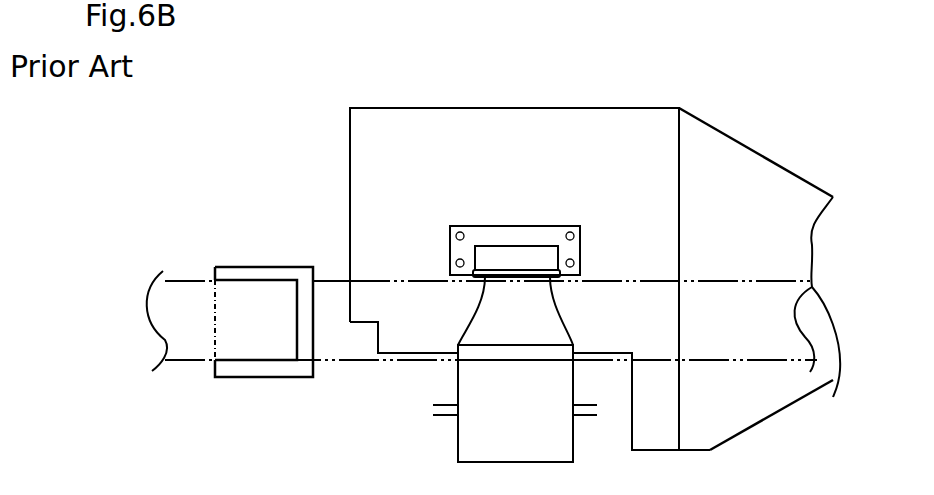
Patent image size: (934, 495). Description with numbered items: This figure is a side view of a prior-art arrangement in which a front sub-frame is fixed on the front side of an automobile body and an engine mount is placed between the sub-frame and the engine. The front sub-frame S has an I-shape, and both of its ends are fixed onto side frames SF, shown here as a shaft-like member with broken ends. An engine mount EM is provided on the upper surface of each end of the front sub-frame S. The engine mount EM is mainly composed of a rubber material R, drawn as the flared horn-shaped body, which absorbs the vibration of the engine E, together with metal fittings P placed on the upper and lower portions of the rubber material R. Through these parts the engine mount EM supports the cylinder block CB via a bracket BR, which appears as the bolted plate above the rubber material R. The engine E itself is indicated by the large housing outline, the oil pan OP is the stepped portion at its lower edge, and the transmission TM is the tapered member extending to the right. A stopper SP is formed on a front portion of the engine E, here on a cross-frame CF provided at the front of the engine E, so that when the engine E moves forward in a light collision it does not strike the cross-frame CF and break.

The stopper SP is at (250, 268).
The cross-frame CF is at (215, 317).
The oil pan OP is at (402, 328).
The engine E is at (477, 108).
The engine mount EM is at (395, 6).
The bracket BR is at (498, 227).
The cylinder block CB is at (545, 187).
The metal fitting P is at (528, 270).
The rubber material R is at (530, 312).
The front sub-frame S is at (573, 440).
The transmission TM is at (765, 167).
The side frame SF is at (692, 0).